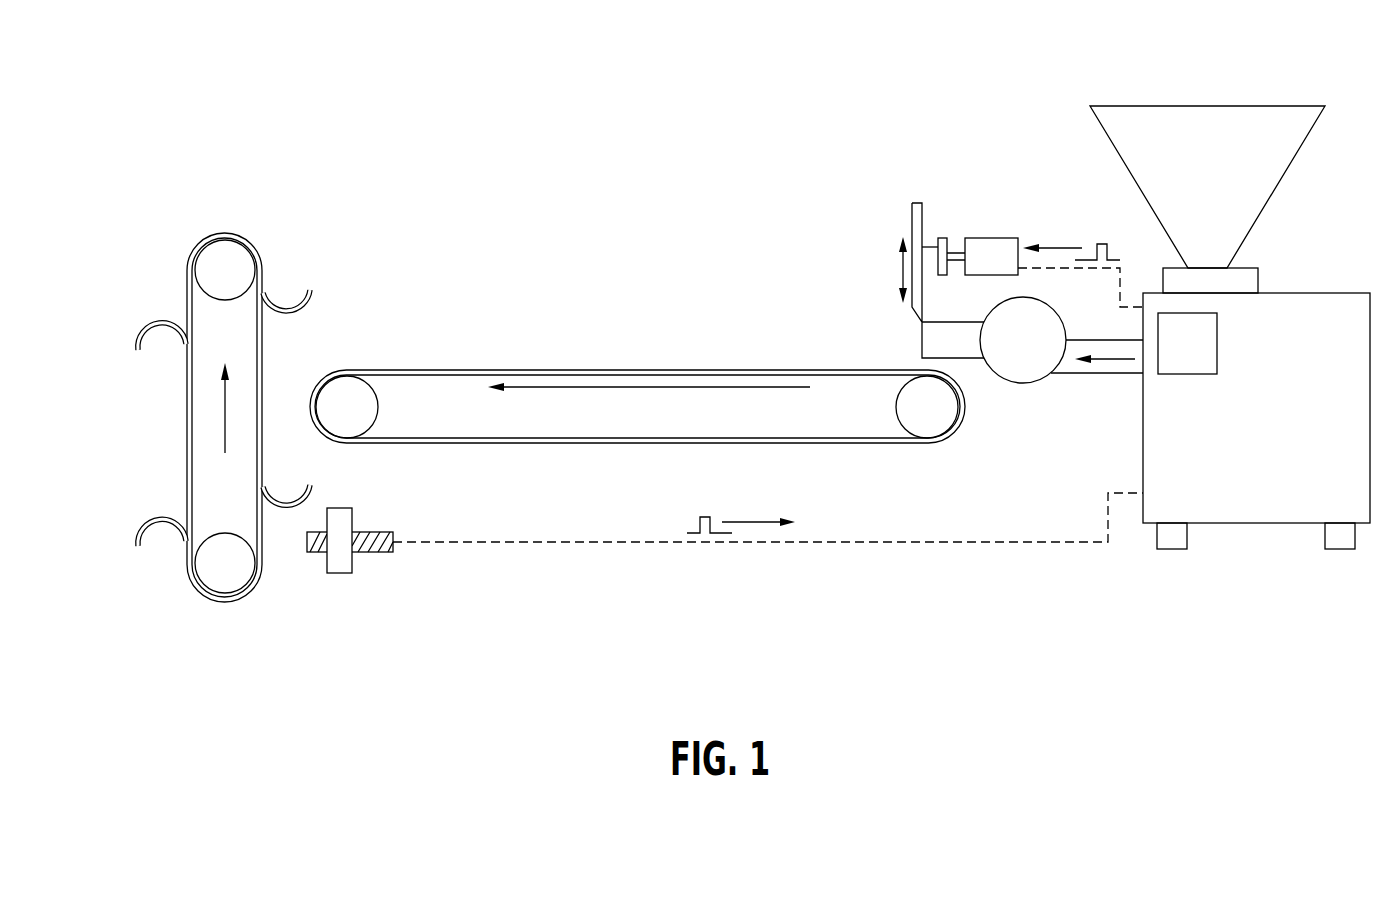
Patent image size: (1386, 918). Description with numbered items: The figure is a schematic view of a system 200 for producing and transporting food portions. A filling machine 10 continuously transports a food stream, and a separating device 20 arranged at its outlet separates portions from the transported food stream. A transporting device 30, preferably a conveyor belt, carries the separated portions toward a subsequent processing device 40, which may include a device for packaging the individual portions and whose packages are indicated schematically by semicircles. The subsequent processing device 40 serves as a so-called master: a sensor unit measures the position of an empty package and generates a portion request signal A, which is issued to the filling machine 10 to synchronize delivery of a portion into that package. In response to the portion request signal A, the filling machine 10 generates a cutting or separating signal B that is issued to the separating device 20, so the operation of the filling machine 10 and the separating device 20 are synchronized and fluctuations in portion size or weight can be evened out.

The system 200 is at (339, 91).
The filling machine 10 is at (1252, 523).
The separating device 20 is at (912, 210).
The transporting device 30 is at (595, 370).
The subsequent processing device 40 is at (215, 233).
The portion request signal A is at (715, 545).
The separating signal B is at (1063, 268).